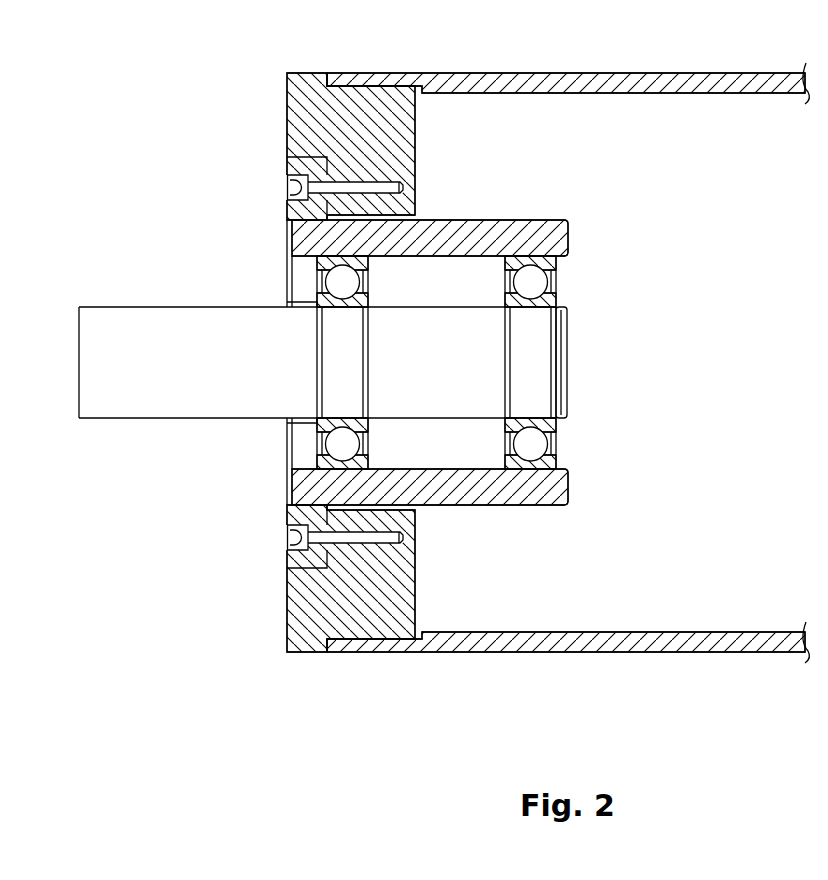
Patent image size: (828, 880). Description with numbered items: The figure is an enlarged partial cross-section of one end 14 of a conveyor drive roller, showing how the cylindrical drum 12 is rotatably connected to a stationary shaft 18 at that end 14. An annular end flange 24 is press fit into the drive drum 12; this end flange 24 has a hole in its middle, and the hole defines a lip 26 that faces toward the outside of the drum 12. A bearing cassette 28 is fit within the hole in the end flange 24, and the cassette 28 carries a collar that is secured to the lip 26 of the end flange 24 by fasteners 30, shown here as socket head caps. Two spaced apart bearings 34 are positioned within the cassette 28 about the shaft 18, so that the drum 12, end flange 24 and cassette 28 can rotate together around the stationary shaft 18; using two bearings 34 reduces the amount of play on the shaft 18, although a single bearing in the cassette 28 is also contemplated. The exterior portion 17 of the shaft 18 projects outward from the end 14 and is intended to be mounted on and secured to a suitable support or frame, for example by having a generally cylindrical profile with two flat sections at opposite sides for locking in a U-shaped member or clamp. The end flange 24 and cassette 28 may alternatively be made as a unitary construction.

The cylindrical drum 12 is at (570, 73).
The end 14 is at (216, 90).
The exterior portion 17 is at (283, 422).
The stationary shaft 18 is at (153, 307).
The annular end flange 24 is at (287, 85).
The lip 26 is at (325, 168).
The bearing cassette 28 is at (490, 228).
The fasteners 30 is at (288, 193).
The bearings 34 is at (320, 432).